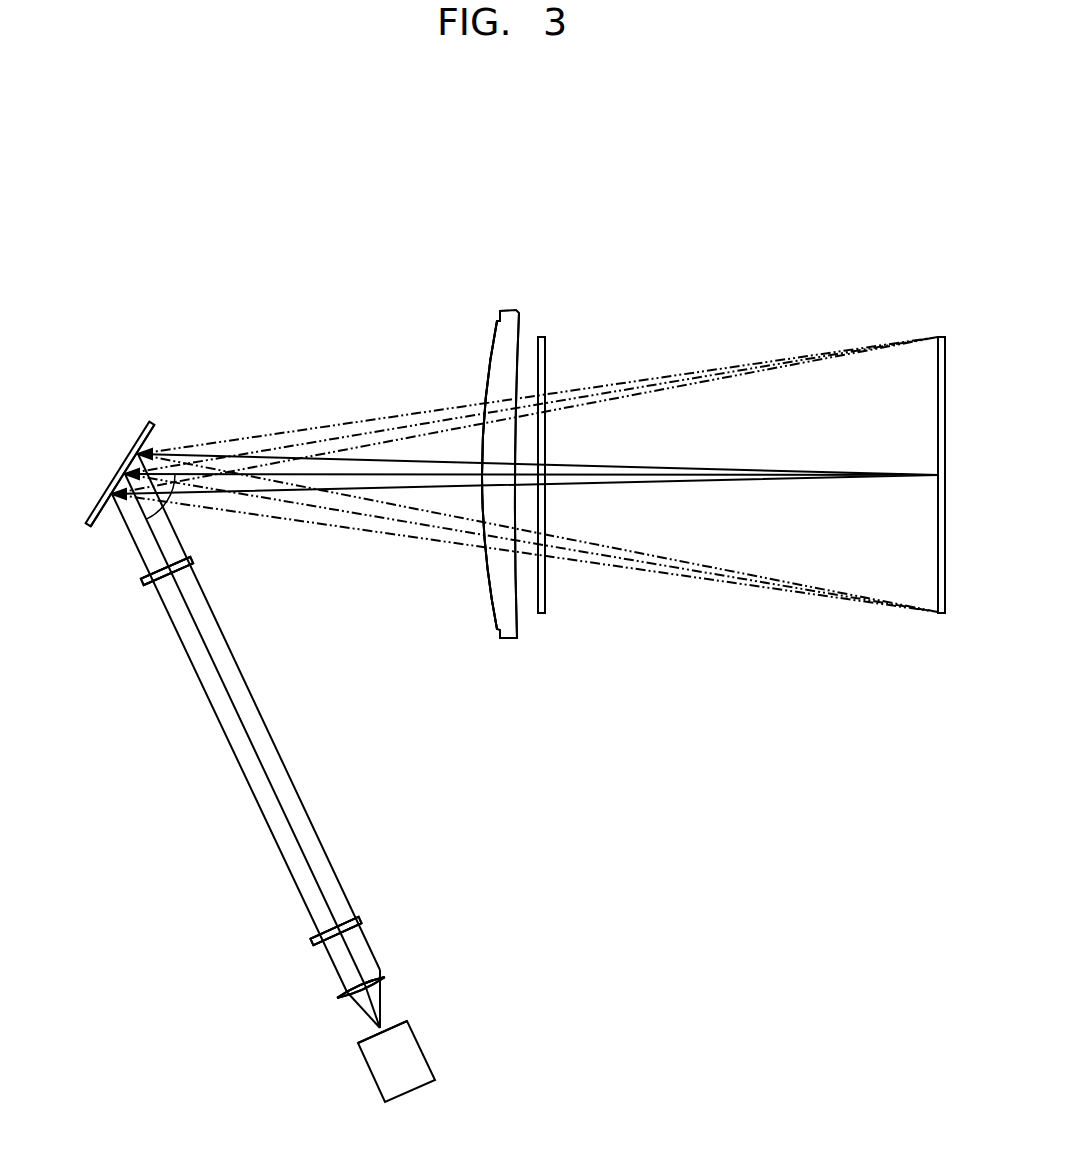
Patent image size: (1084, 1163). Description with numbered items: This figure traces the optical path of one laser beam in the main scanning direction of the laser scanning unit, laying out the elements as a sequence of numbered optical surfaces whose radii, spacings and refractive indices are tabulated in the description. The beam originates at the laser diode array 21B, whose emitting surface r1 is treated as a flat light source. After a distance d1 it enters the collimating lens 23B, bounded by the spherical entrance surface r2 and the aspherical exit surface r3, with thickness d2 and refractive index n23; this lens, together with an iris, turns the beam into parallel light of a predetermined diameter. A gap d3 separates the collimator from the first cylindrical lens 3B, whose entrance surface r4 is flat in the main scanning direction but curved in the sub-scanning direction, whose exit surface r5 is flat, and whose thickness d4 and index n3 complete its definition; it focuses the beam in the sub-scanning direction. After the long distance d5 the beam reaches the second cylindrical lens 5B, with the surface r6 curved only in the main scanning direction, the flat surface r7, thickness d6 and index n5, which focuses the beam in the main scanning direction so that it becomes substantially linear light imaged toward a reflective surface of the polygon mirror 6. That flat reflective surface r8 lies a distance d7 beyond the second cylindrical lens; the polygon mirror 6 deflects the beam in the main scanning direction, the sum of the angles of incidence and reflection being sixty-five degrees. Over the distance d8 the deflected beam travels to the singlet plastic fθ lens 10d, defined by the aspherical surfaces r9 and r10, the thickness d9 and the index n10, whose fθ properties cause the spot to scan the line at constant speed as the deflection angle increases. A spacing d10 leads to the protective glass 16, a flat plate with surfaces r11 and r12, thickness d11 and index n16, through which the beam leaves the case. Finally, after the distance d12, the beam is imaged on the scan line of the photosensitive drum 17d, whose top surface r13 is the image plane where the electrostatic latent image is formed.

The laser diode array 21B is at (436, 1059).
The collimating lens 23B is at (386, 978).
The first cylindrical lens 3B is at (362, 922).
The second cylindrical lens 5B is at (151, 586).
The polygon mirror 6 is at (92, 523).
The fθ lens 10d is at (503, 322).
The protective glass 16 is at (549, 340).
The photosensitive drum 17d is at (940, 337).
The light source surface r1 is at (402, 1020).
The collimating lens entrance surface r2 is at (390, 981).
The aspherical surface of collimating lens r3 is at (340, 1000).
The first cylindrical lens entrance surface r4 is at (332, 955).
The first cylindrical lens exit surface r5 is at (312, 942).
The second cylindrical lens entrance surface r6 is at (201, 586).
The second cylindrical lens exit surface r7 is at (193, 559).
The polygon mirror reflective surface r8 is at (119, 506).
The fθ lens entrance surface r9 is at (487, 379).
The fθ lens exit surface r10 is at (520, 353).
The protective glass entrance surface r11 is at (538, 351).
The protective glass exit surface r12 is at (546, 376).
The top surface of photosensitive drum r13 is at (936, 605).
The distance from light source to collimating lens d1 is at (366, 1030).
The collimating lens thickness d2 is at (350, 1000).
The distance from collimating lens to first cylindrical lens d3 is at (340, 966).
The first cylindrical lens thickness d4 is at (322, 937).
The distance from first to second cylindrical lens d5 is at (250, 751).
The second cylindrical lens thickness d6 is at (161, 601).
The distance from second cylindrical lens to polygon mirror d7 is at (153, 566).
The distance from polygon mirror to fθ lens d8 is at (346, 481).
The fθ lens thickness d9 is at (493, 491).
The distance from fθ lens to protective glass d10 is at (528, 481).
The protective glass thickness d11 is at (581, 521).
The distance from protective glass to photosensitive drum d12 is at (741, 479).
The refractive index of first cylindrical lens n3 is at (351, 920).
The refractive index of second cylindrical lens n5 is at (196, 578).
The refractive index of fθ lens n10 is at (501, 589).
The refractive index of protective glass n16 is at (546, 613).
The refractive index of collimating lens n23 is at (390, 979).